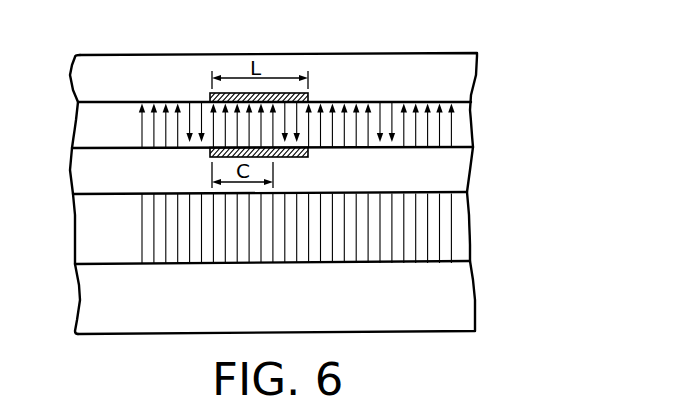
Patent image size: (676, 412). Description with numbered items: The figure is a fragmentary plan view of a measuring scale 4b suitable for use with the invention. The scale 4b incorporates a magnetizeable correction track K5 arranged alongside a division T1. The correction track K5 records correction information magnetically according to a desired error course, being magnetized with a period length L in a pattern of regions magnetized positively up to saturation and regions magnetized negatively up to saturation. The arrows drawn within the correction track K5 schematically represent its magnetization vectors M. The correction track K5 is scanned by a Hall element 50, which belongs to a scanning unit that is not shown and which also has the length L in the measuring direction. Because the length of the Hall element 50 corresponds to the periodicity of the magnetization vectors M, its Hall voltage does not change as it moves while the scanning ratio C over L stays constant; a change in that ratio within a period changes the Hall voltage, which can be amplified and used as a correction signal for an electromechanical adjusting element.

The Hall element 50 is at (317, 84).
The correction track K5 is at (467, 115).
The magnetization vectors M is at (452, 128).
The division T1 is at (463, 232).
The scale 4b is at (462, 297).